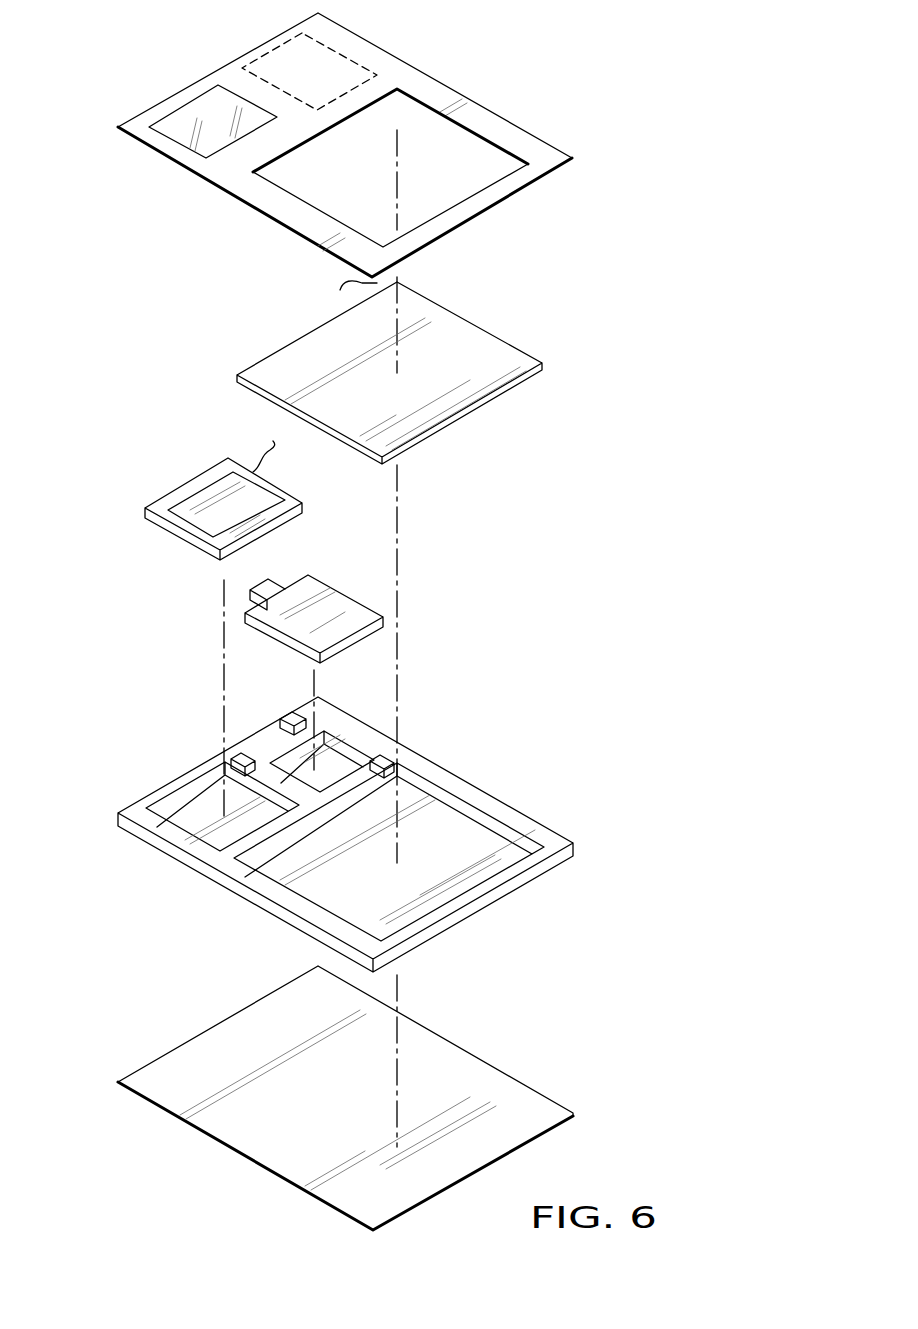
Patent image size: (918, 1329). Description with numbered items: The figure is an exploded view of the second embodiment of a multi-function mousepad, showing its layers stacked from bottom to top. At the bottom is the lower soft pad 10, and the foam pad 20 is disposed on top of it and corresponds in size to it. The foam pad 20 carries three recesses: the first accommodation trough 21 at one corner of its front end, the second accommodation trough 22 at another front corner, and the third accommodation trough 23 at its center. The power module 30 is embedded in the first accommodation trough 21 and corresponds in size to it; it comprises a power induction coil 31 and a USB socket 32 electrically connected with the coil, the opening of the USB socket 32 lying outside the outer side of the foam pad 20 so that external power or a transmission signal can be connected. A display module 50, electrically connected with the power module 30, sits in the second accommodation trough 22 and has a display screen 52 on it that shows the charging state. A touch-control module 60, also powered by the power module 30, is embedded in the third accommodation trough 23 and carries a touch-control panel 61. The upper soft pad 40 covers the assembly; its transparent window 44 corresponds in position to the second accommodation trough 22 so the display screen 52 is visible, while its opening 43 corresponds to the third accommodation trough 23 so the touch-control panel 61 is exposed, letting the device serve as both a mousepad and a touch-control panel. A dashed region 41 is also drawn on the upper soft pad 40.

The lower soft pad 10 is at (525, 1080).
The foam pad 20 is at (534, 797).
The first accommodation trough 21 is at (343, 757).
The second accommodation trough 22 is at (182, 812).
The third accommodation trough 23 is at (308, 863).
The power module 30 is at (266, 639).
The power induction coil 31 is at (343, 607).
The USB socket 32 is at (250, 590).
The upper soft pad 40 is at (538, 136).
The sensing region 41 is at (272, 50).
The opening 43 is at (443, 183).
The transparent window 44 is at (177, 126).
The display module 50 is at (205, 455).
The display screen 52 is at (193, 508).
The touch-control module 60 is at (506, 340).
The touch-control panel 61 is at (465, 393).